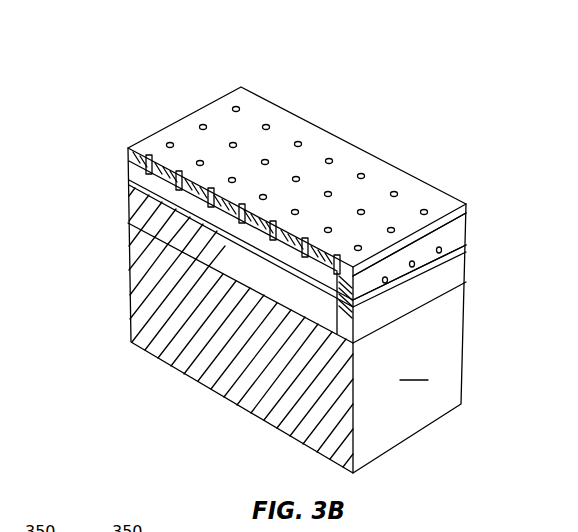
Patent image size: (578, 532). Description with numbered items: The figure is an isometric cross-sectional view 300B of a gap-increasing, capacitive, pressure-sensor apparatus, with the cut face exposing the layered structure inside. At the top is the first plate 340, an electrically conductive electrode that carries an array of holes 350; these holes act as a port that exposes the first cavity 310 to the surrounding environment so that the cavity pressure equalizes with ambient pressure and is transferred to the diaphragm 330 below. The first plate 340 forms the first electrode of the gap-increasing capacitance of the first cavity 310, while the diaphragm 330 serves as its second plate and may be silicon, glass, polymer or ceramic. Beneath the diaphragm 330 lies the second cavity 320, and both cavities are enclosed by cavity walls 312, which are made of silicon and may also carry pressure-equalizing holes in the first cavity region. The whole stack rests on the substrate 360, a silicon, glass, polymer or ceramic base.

The isometric cross-sectional view 300B is at (115, 75).
The first plate 340 is at (183, 133).
The holes 350 is at (240, 102).
The diaphragm 330 is at (225, 222).
The first cavity 310 is at (228, 262).
The second cavity 320 is at (133, 302).
The cavity walls 312 is at (464, 266).
The substrate 360 is at (297, 310).